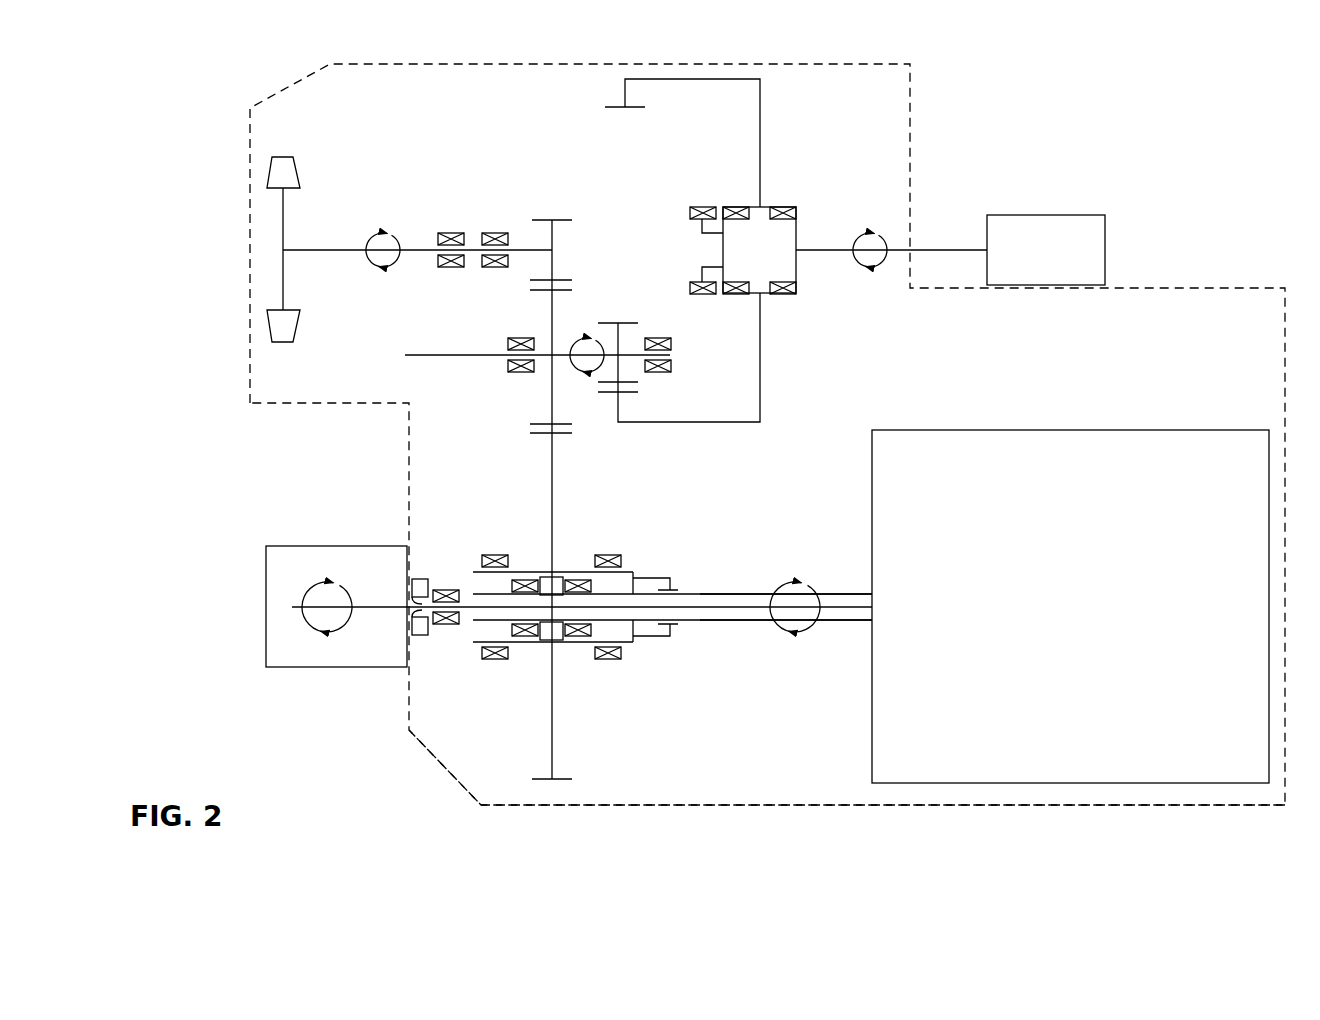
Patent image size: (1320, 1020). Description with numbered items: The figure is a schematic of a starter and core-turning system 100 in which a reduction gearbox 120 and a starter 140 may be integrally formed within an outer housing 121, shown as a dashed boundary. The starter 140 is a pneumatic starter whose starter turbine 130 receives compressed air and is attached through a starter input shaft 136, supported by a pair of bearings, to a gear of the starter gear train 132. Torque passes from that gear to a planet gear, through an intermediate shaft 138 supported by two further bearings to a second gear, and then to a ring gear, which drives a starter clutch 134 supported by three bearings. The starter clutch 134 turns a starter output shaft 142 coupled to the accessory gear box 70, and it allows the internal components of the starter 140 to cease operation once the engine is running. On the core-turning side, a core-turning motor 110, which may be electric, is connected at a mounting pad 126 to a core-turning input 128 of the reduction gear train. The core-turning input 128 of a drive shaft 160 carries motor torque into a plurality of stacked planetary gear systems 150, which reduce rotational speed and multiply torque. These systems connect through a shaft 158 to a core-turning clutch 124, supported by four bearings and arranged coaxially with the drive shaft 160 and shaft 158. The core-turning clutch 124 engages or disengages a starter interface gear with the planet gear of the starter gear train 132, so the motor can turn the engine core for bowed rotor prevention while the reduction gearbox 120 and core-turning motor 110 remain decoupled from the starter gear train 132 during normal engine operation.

The system 100 is at (175, 60).
The starter 140 is at (250, 140).
The starter turbine 130 is at (300, 175).
The starter gear train 132 is at (546, 178).
The starter input shaft 136 is at (417, 252).
The intermediate shaft 138 is at (436, 357).
The starter clutch 134 is at (778, 234).
The starter output shaft 142 is at (933, 248).
The accessory gear box 70 is at (1045, 215).
The stacked planetary gear systems 150 is at (905, 430).
The core-turning motor 110 is at (266, 608).
The mounting pad 126 is at (385, 529).
The core-turning input 128 is at (436, 634).
The core-turning clutch 124 is at (564, 642).
The shaft 158 is at (720, 593).
The drive shaft 160 is at (710, 609).
The outer housing 121 is at (452, 773).
The reduction gearbox 120 is at (580, 800).